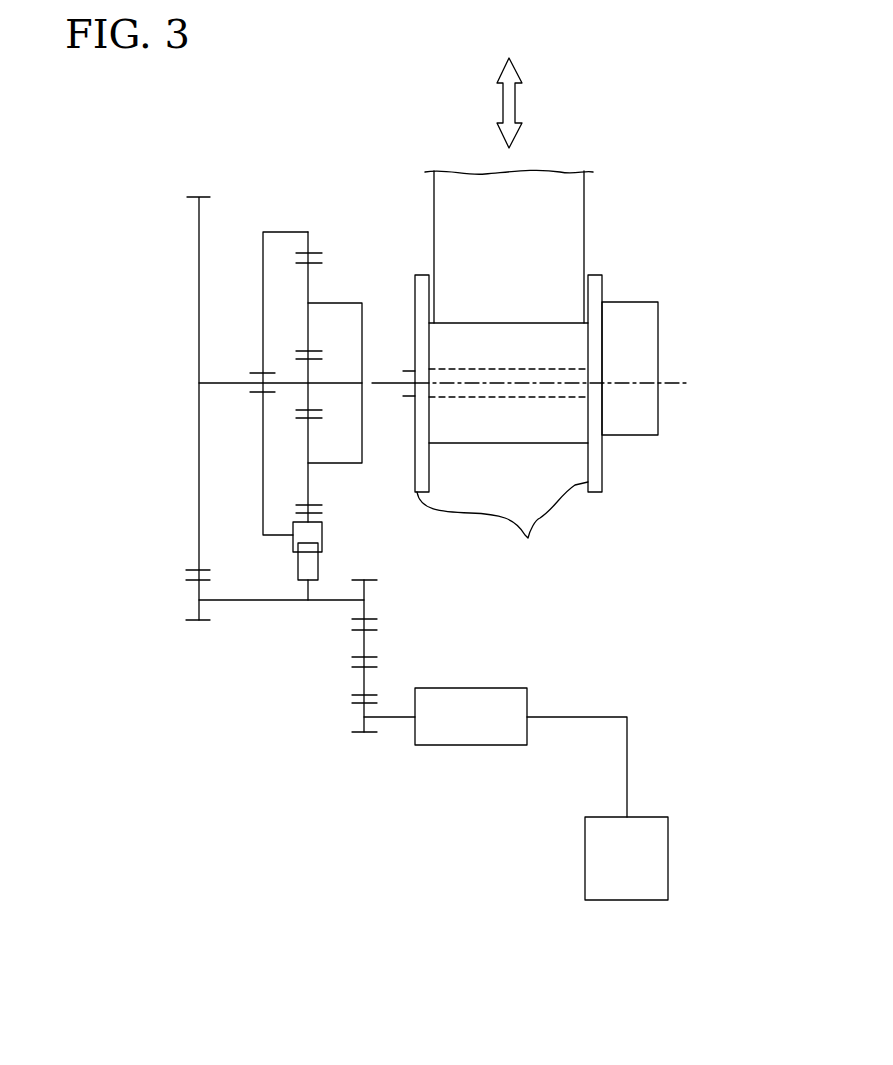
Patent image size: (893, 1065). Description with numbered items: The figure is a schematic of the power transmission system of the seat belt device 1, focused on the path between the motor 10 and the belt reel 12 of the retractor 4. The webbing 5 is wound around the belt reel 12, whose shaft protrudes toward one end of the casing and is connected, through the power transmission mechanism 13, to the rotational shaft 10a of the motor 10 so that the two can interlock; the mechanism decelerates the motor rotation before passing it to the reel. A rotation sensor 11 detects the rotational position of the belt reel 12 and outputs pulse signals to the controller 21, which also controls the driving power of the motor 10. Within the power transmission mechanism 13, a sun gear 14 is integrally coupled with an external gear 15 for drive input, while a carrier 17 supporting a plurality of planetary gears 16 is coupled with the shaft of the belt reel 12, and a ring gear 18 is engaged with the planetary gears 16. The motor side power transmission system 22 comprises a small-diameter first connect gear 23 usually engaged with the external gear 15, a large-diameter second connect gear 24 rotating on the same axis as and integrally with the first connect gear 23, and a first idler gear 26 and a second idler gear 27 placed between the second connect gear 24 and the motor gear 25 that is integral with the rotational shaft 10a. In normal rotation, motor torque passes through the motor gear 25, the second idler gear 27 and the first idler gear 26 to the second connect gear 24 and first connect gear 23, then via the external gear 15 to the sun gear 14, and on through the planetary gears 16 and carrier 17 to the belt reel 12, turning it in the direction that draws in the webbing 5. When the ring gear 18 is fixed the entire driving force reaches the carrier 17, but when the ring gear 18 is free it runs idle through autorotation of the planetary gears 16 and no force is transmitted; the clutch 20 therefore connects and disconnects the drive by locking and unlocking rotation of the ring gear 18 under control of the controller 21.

The label attaching device 1 is at (682, 582).
The retractor 4 is at (610, 287).
The webbing 5 is at (563, 216).
The motor 10 is at (472, 728).
The rotational shaft 10a is at (390, 719).
The rotation sensor 11 is at (501, 423).
The belt reel 12 is at (557, 397).
The power transmission mechanism 13 is at (309, 227).
The sun gear 14 is at (310, 392).
The external gear 15 is at (195, 193).
The planetary gears 16 is at (310, 282).
The carrier 17 is at (333, 303).
The ring gear 18 is at (262, 462).
The clutch 20 is at (332, 558).
The controller 21 is at (650, 858).
The motor side power transmission system 22 is at (330, 630).
The first connect gear 23 is at (198, 603).
The second connect gear 24 is at (368, 593).
The motor gear 25 is at (350, 723).
The first idler gear 26 is at (368, 643).
The second idler gear 27 is at (368, 682).